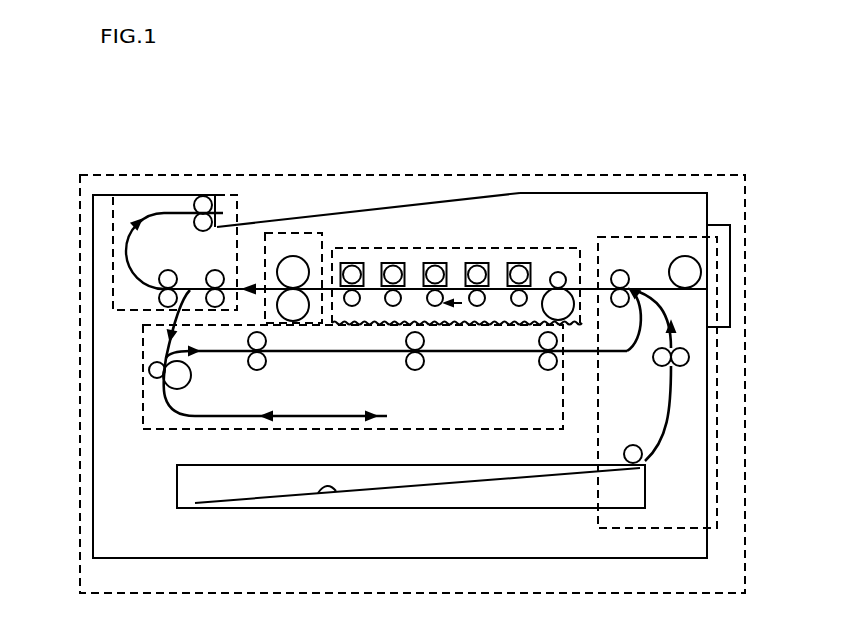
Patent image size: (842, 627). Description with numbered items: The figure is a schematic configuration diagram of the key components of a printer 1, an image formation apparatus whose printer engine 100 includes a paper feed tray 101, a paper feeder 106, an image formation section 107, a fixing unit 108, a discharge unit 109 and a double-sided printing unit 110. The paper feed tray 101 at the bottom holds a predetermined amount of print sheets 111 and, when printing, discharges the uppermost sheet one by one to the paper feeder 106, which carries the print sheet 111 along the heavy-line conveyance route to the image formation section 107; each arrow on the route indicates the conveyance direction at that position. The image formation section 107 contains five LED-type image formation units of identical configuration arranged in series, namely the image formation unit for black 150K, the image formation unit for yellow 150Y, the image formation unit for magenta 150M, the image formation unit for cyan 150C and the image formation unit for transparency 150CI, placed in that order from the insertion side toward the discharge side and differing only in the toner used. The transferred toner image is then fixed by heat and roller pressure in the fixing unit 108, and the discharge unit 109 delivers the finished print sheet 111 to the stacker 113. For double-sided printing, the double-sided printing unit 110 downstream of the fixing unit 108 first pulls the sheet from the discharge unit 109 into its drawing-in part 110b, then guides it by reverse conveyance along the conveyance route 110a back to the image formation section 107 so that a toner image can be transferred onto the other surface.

The printer 1 is at (712, 175).
The printer engine 100 is at (662, 193).
The paper feed tray 101 is at (177, 487).
The paper feeder 106 is at (717, 480).
The image formation section 107 is at (577, 247).
The fixing unit 108 is at (318, 333).
The discharge unit 109 is at (113, 258).
The double-sided printing unit 110 is at (143, 360).
The conveyance route 110a is at (477, 355).
The drawing-in part 110b is at (322, 416).
The print sheet 111 is at (342, 493).
The stacker 113 is at (267, 220).
The image formation unit for transparency 150CI is at (346, 248).
The image formation unit for cyan 150C is at (392, 247).
The image formation unit for magenta 150M is at (435, 247).
The image formation unit for yellow 150Y is at (481, 247).
The image formation unit for black 150K is at (533, 247).